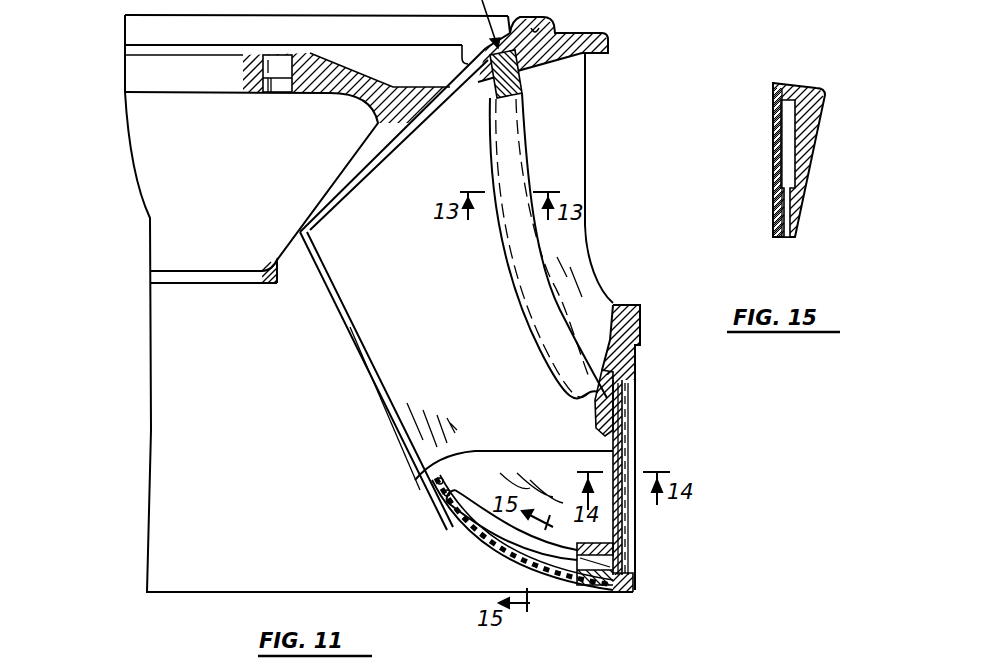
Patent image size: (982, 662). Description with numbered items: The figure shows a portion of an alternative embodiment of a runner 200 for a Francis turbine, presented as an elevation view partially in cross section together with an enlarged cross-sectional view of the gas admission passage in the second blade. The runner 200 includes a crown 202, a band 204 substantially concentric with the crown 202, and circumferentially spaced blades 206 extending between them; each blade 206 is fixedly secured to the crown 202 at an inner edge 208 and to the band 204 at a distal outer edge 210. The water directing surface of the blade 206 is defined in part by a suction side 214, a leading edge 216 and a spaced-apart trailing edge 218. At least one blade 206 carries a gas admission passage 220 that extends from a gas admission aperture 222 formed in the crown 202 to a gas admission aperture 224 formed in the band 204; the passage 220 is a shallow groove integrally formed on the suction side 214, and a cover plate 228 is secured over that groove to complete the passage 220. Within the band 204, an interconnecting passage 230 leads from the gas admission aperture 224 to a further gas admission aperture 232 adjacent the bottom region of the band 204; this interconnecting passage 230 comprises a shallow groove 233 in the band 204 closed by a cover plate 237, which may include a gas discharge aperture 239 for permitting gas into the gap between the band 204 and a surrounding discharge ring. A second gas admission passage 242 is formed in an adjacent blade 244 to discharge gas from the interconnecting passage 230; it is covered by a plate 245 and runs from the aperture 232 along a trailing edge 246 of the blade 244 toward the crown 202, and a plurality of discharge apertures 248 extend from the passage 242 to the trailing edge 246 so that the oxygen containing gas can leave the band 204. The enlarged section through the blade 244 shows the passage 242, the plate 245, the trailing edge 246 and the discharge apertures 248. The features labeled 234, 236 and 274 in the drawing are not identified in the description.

In FIG. 11, the runner 200 is at (138, 407).
In FIG. 11, the crown 202 is at (605, 37).
In FIG. 11, the band 204 is at (640, 305).
In FIG. 11, the blade 206 is at (370, 303).
In FIG. 11, the inner edge 208 is at (443, 93).
In FIG. 11, the distal outer edge 210 is at (627, 432).
In FIG. 11, the suction side 214 is at (527, 245).
In FIG. 11, the leading edge 216 is at (585, 108).
In FIG. 11, the trailing edge 218 is at (343, 347).
In FIG. 11, the gas admission passage 220 is at (513, 82).
In FIG. 11, the gas admission aperture 222 is at (525, 17).
In FIG. 11, the gas admission aperture 224 is at (625, 391).
In FIG. 11, the cover plate 228 is at (527, 263).
In FIG. 11, the interconnecting passage 230 is at (626, 452).
In FIG. 11, the gas admission aperture 232 is at (617, 555).
In FIG. 11, the shallow groove 233 is at (640, 537).
In FIG. 11, the base 234 is at (567, 657).
In FIG. 11, the base foot 236 is at (640, 657).
In FIG. 11, the cover plate 237 is at (640, 517).
In FIG. 11, the gas discharge aperture 239 is at (640, 465).
In FIG. 11, the gas admission passage 242 is at (597, 578).
In FIG. 15, the gas admission passage 242 is at (792, 178).
In FIG. 11, the blade 244 is at (512, 525).
In FIG. 15, the blade 244 is at (812, 114).
In FIG. 11, the plate 245 is at (453, 523).
In FIG. 15, the plate 245 is at (773, 142).
In FIG. 11, the trailing edge 246 is at (540, 583).
In FIG. 15, the trailing edge 246 is at (773, 243).
In FIG. 11, the discharge apertures 248 is at (467, 535).
In FIG. 15, the discharge apertures 248 is at (796, 246).
In FIG. 11, the bottom wall 274 is at (440, 483).